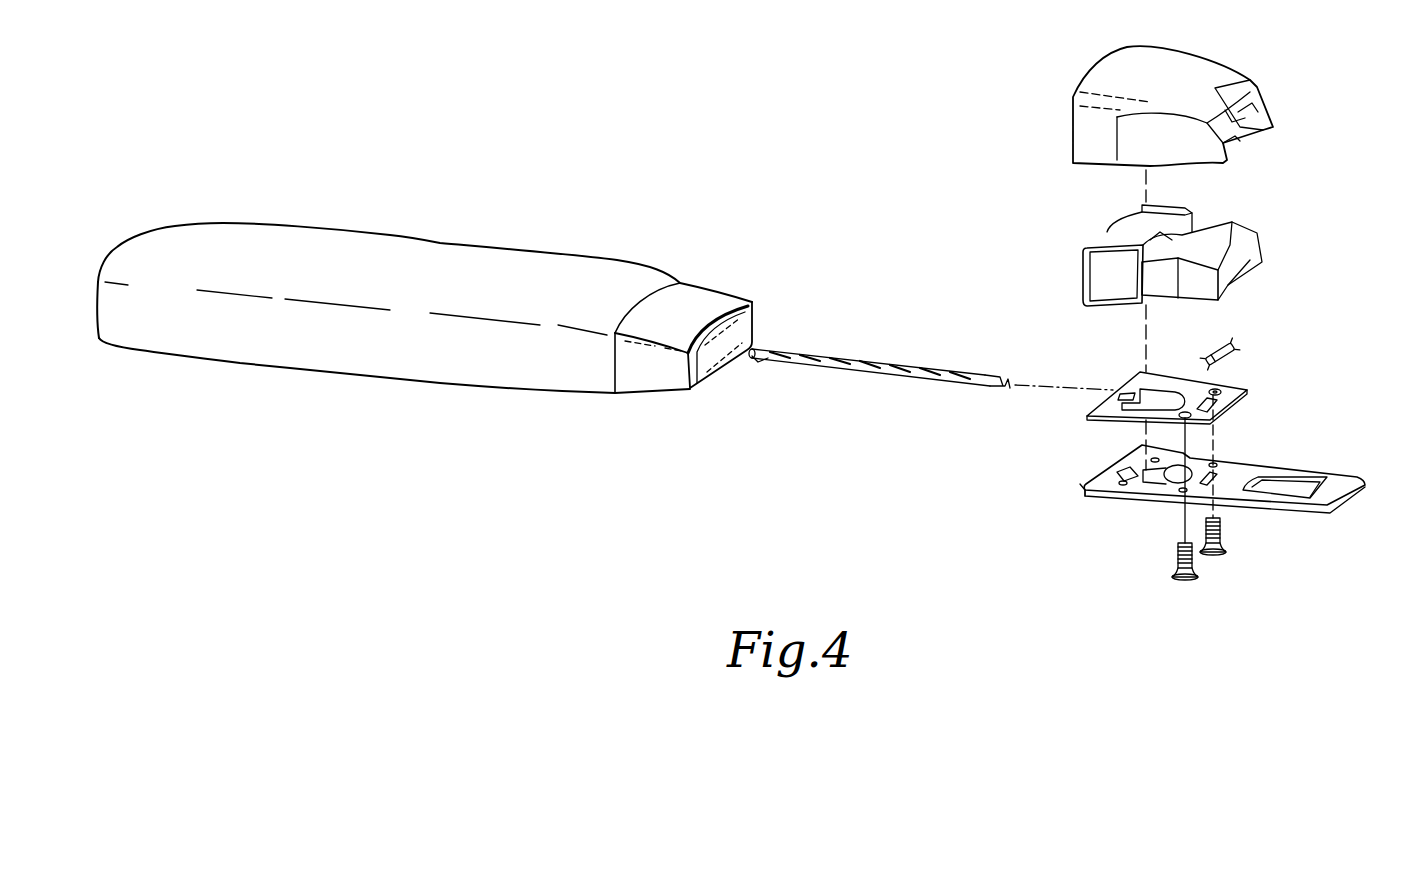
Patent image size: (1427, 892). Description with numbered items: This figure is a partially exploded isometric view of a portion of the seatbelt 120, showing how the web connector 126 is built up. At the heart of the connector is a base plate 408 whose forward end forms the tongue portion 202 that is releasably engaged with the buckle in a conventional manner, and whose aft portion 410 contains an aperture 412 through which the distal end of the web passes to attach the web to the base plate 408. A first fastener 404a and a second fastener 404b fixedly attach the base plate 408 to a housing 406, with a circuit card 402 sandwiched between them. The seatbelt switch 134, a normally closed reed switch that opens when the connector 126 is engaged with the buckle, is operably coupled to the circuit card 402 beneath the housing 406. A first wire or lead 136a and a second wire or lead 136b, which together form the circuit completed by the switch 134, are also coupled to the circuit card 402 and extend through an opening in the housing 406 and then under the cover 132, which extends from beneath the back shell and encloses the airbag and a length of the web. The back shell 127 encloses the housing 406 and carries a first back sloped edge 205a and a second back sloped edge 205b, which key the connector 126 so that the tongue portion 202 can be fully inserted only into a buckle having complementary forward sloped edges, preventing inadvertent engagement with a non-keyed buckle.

The seatbelt 120 is at (825, 167).
The cover 132 is at (484, 248).
The first wire or lead 136a is at (797, 357).
The second wire or lead 136b is at (750, 360).
The back shell 127 is at (1247, 102).
The first back sloped edge 205a is at (1250, 107).
The second back sloped edge 205b is at (1230, 140).
The web connector 126 is at (1318, 244).
The housing 406 is at (1250, 248).
The seatbelt switch 134 is at (1230, 327).
The circuit card 402 is at (1237, 385).
The base plate 408 is at (1260, 462).
The tongue portion 202 is at (1337, 487).
The aft portion 410 is at (1080, 484).
The aperture 412 is at (1160, 473).
The first fastener 404a is at (1193, 576).
The second fastener 404b is at (1230, 548).